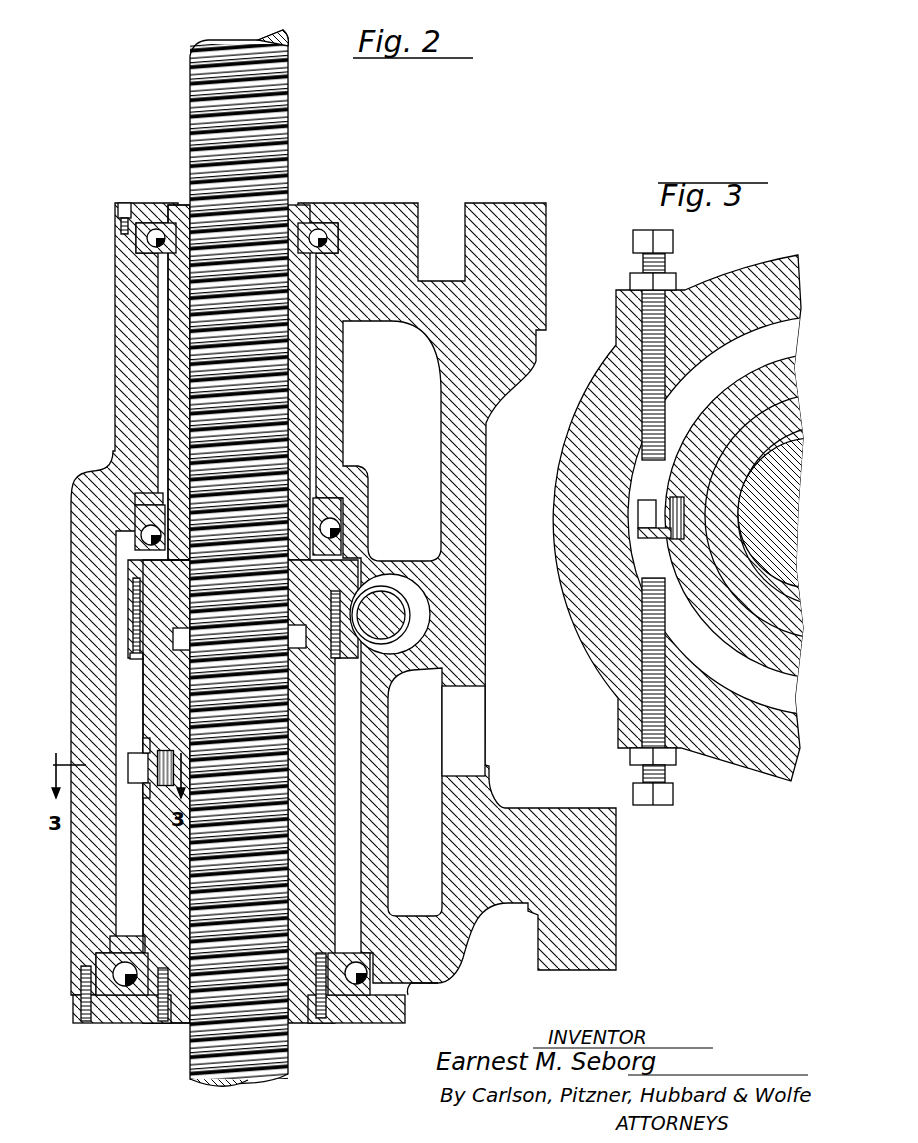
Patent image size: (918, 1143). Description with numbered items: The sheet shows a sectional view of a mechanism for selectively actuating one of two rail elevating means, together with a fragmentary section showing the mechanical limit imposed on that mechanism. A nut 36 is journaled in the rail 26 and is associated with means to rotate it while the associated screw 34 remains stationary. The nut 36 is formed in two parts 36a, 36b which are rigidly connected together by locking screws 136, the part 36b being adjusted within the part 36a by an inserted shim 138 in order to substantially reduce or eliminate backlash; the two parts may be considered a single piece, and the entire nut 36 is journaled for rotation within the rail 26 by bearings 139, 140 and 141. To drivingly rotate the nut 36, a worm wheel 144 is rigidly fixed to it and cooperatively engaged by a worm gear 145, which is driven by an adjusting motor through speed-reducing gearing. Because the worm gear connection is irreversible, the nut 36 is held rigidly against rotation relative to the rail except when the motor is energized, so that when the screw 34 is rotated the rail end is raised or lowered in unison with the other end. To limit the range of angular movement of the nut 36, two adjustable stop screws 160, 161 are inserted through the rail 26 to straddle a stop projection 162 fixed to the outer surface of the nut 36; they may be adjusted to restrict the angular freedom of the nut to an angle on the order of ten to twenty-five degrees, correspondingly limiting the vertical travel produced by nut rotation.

In FIG. 2, the rail 26 is at (386, 196).
In FIG. 3, the rail 26 is at (740, 764).
In FIG. 2, the screw 34 is at (278, 160).
In FIG. 2, the nut 36 is at (166, 404).
In FIG. 3, the nut 36 is at (740, 382).
In FIG. 2, the nut part 36a is at (170, 430).
In FIG. 2, the nut part 36b is at (177, 692).
In FIG. 2, the locking screws 136 is at (154, 1011).
In FIG. 2, the shim 138 is at (313, 1008).
In FIG. 2, the bearing 139 is at (402, 978).
In FIG. 2, the bearing 140 is at (326, 522).
In FIG. 2, the bearing 141 is at (310, 232).
In FIG. 2, the worm wheel 144 is at (333, 650).
In FIG. 2, the worm gear 145 is at (380, 615).
In FIG. 3, the stop screw 160 is at (638, 306).
In FIG. 3, the stop screw 161 is at (638, 688).
In FIG. 3, the stop projection 162 is at (638, 492).